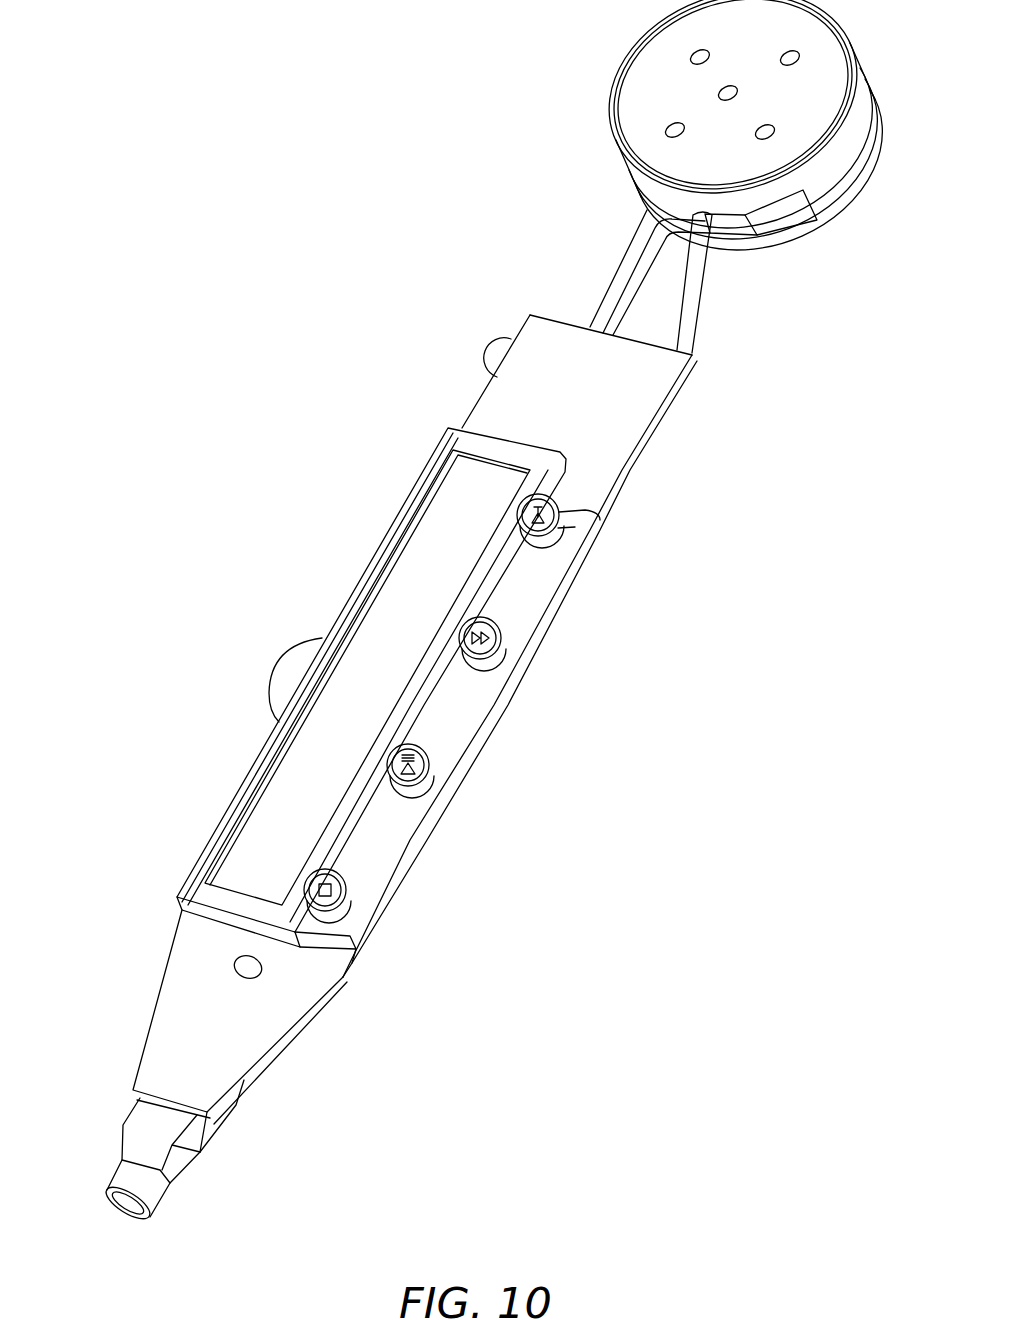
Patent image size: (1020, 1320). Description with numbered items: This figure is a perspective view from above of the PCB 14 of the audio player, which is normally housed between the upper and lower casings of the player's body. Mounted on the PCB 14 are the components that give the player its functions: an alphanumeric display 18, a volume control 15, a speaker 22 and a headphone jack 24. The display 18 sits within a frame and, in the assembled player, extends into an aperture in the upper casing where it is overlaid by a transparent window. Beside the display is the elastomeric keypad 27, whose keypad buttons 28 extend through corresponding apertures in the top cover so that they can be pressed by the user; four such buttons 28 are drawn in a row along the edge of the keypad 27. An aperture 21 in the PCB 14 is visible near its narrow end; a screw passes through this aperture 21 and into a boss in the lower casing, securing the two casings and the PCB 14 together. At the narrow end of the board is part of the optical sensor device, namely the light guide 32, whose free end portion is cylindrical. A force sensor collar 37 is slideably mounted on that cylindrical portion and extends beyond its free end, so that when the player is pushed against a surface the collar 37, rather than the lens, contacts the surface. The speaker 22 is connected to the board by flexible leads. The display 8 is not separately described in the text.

The display 8 is at (437, 513).
The PCB 14 is at (257, 1037).
The volume control 15 is at (290, 678).
The alphanumeric display 18 is at (198, 892).
The aperture 21 is at (240, 968).
The speaker 22 is at (648, 77).
The headphone jack 24 is at (502, 352).
The elastomeric keypad 27 is at (548, 578).
The keypad buttons 28 is at (497, 665).
The light guide 32 is at (157, 1130).
The force sensor collar 37 is at (150, 1195).